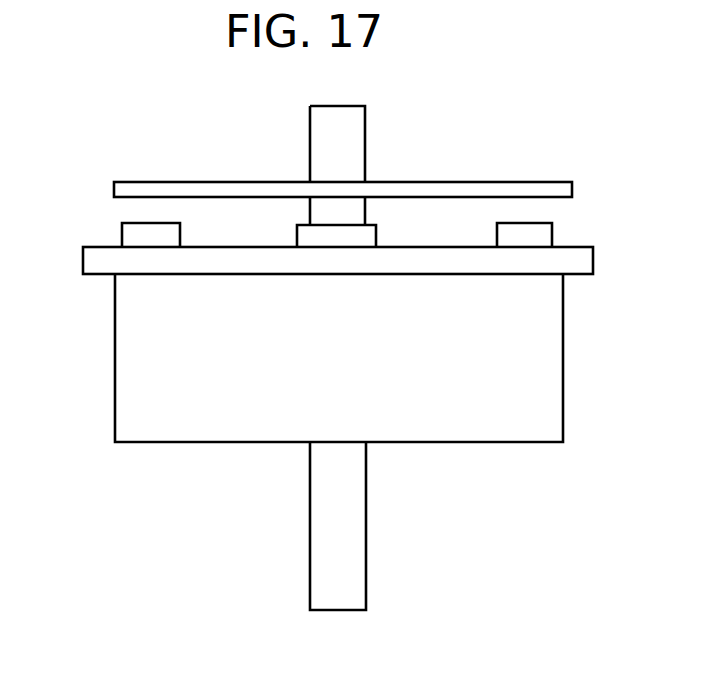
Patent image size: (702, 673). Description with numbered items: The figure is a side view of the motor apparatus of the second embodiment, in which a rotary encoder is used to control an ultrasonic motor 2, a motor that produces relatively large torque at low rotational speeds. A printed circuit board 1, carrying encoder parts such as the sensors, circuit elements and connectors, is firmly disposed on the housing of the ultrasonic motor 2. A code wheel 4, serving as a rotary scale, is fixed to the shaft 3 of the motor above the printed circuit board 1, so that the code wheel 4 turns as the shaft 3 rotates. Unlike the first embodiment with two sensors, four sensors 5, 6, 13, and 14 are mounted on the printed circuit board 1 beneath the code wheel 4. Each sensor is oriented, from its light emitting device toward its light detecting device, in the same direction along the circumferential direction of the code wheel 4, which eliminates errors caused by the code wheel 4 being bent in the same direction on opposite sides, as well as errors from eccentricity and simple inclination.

The printed circuit board 1 is at (98, 267).
The ultrasonic motor 2 is at (450, 430).
The shaft 3 is at (355, 145).
The code wheel 4 is at (175, 187).
The sensor 5 is at (130, 233).
The sensor 6 is at (540, 235).
The sensor 13 is at (377, 230).
The sensor 14 is at (318, 247).